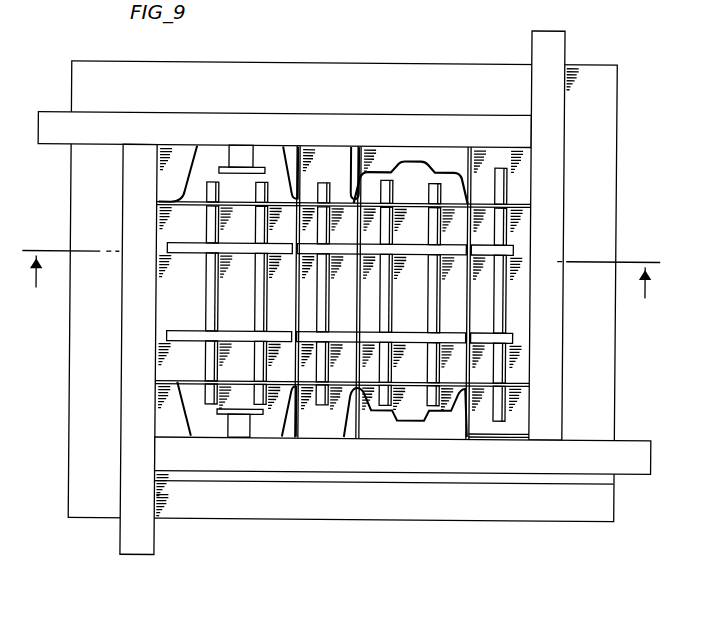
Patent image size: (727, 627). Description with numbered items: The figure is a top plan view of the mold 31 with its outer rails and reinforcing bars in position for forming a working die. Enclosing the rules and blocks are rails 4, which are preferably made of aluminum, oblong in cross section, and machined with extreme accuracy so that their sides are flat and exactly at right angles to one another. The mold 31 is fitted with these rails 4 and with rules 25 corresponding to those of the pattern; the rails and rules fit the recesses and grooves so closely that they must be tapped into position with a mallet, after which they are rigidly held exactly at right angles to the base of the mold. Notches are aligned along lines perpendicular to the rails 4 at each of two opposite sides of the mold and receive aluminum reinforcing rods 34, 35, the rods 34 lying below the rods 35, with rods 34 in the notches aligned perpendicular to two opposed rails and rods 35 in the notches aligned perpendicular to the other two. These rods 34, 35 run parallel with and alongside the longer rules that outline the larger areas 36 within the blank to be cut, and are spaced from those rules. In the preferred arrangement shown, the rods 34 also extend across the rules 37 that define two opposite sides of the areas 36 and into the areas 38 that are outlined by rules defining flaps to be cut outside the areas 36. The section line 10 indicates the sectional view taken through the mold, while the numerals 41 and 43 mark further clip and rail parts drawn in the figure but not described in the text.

The mold 31 is at (628, 147).
The rail 43 is at (346, 146).
The reinforcing rods 34 is at (434, 297).
The larger areas 36 is at (412, 230).
The rules 25 is at (511, 383).
The reinforcing rods 35 is at (236, 247).
The hook clip 41 is at (178, 185).
The rules 37 is at (309, 196).
The areas 38 is at (270, 172).
The section line 10- 10 is at (341, 288).
The rails 4 is at (241, 138).